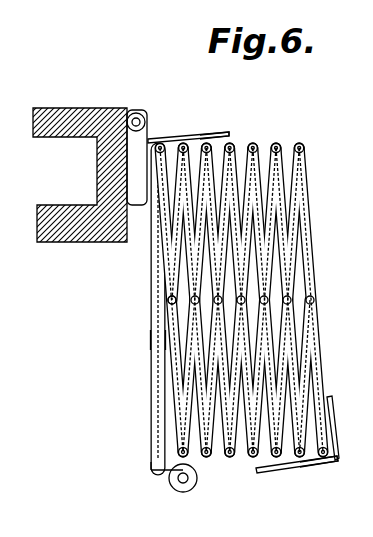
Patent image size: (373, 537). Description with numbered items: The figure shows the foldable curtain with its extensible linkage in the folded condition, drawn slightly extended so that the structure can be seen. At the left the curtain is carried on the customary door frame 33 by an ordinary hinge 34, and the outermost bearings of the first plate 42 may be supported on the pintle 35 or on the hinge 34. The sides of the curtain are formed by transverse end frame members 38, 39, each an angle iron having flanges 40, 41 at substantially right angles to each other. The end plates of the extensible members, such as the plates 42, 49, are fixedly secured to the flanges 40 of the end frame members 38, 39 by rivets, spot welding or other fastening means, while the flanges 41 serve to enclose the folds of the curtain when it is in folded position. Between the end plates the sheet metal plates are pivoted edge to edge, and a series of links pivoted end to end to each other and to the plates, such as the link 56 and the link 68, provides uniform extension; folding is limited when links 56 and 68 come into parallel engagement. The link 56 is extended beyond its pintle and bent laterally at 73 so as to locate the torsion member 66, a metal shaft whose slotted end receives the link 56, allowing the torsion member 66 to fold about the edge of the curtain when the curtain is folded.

The door frame 33 is at (72, 112).
The hinge 34 is at (135, 113).
The pintle 35 is at (161, 143).
The end frame member 38 is at (183, 138).
The flange 40 is at (220, 135).
The flange 41 is at (155, 175).
The plate 42 is at (162, 231).
The plate 49 is at (307, 258).
The link 56 is at (171, 338).
The link 68 is at (172, 400).
The lateral bend 73 is at (158, 476).
The torsion member 66 is at (183, 492).
The end frame member 39 is at (326, 464).